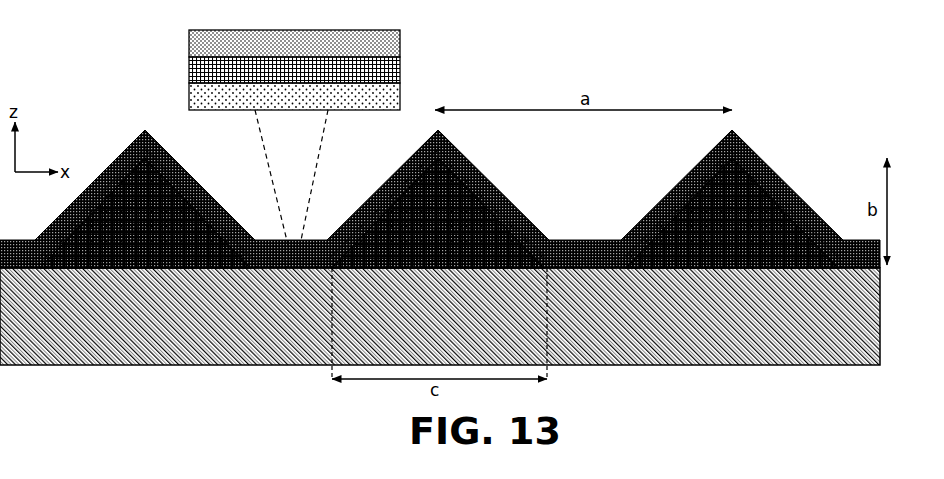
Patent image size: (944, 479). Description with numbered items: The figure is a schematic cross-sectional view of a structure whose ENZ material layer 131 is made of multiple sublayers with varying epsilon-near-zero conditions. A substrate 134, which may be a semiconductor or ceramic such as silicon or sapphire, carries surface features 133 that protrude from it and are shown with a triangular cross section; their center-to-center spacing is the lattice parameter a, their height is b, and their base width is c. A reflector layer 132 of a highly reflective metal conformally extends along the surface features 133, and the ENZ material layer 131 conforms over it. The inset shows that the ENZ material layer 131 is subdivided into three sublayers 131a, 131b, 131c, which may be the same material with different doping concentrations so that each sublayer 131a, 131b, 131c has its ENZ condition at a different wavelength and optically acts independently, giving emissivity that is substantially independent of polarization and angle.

The ENZ material layer 131 is at (440, 149).
The first ENZ sublayer 131a is at (267, 43).
The second ENZ sublayer 131b is at (267, 70).
The third ENZ sublayer 131c is at (267, 96).
The reflector layer 132 is at (784, 206).
The surface features 133 is at (714, 225).
The substrate 134 is at (87, 355).